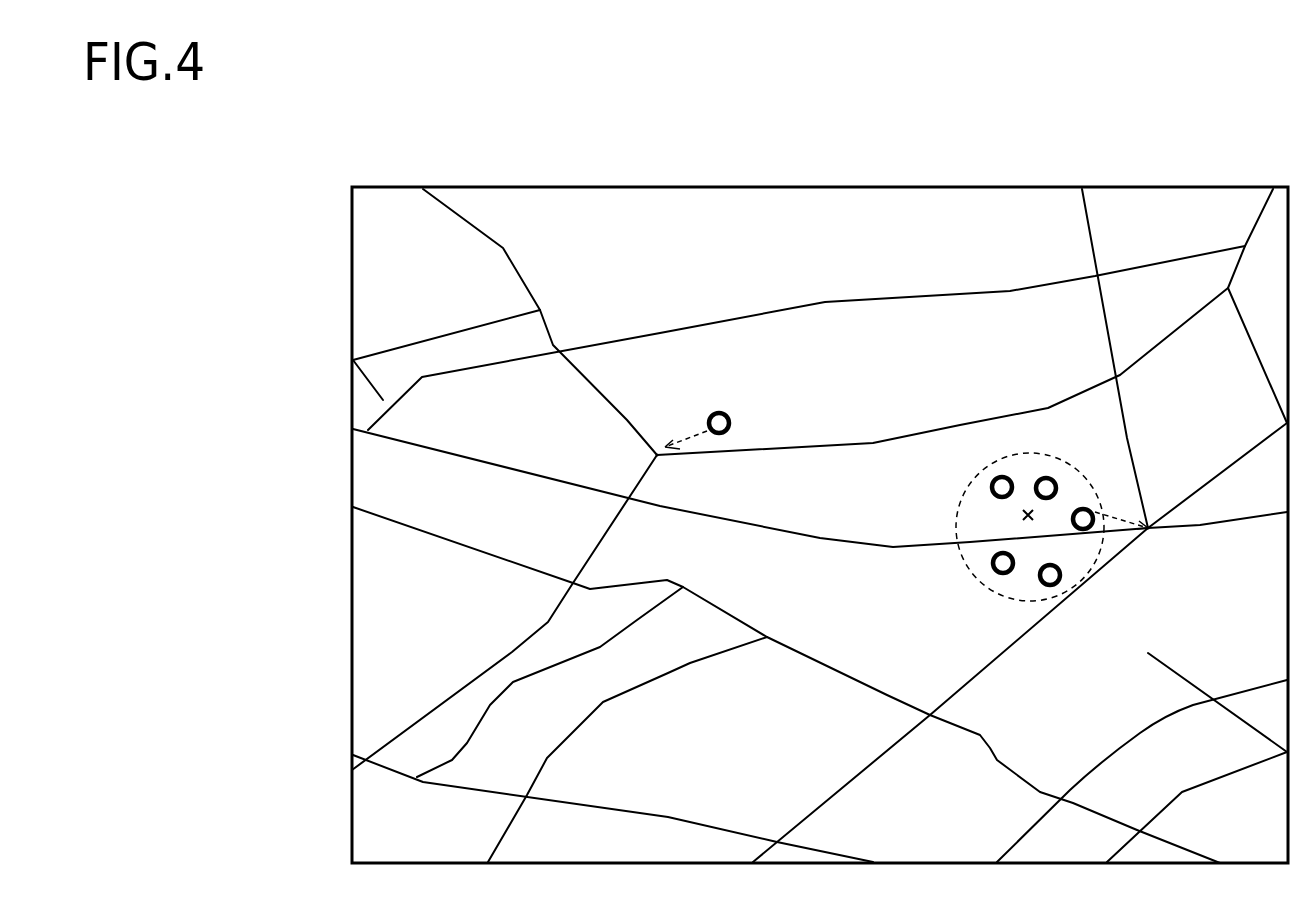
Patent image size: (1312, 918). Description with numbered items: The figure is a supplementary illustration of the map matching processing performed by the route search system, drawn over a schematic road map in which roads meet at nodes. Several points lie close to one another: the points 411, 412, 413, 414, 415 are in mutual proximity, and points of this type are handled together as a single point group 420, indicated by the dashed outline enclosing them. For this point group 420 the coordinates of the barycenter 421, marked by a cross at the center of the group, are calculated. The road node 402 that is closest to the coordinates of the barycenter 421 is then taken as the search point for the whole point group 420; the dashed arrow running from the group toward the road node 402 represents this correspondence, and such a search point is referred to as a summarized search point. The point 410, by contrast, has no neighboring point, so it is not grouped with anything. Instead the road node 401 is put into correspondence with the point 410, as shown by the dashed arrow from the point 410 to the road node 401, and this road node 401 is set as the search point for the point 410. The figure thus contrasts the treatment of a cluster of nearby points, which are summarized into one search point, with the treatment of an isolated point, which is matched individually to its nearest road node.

The road node 401 is at (657, 455).
The road node 402 is at (1148, 528).
The point 410 is at (730, 408).
The point 411 is at (992, 480).
The point 412 is at (1046, 474).
The point 413 is at (1083, 531).
The point 414 is at (1050, 587).
The point 415 is at (996, 571).
The point group 420 is at (966, 497).
The barycenter 421 is at (1022, 517).